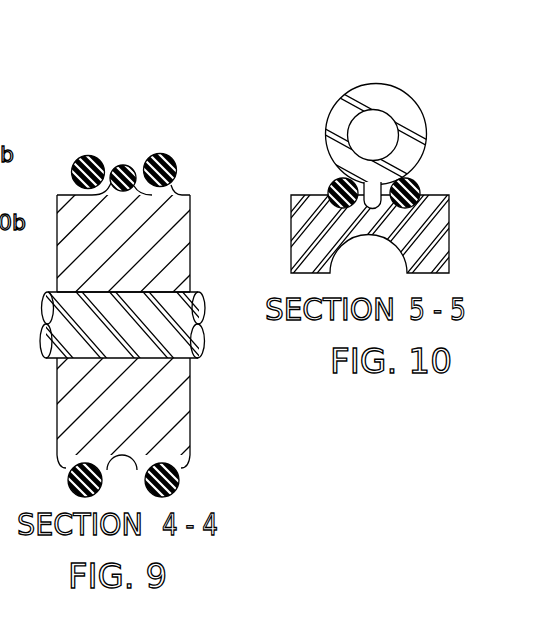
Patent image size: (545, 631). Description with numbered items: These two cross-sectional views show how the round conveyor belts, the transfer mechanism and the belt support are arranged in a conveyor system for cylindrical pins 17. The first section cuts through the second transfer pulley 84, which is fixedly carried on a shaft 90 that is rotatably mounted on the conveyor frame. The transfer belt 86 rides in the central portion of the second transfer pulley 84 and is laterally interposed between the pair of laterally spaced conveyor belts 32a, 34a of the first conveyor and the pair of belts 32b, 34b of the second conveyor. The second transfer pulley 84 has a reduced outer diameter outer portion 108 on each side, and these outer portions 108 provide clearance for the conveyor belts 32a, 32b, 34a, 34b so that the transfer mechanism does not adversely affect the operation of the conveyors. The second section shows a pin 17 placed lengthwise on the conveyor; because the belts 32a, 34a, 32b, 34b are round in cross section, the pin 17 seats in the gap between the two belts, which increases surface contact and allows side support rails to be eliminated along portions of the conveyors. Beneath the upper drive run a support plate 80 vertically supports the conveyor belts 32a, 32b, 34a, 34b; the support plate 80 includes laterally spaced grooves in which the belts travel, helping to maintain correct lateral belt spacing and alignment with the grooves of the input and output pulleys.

In FIG. 10, the cylindrical pin 17 is at (410, 96).
In FIG. 9, the belt 32a is at (152, 120).
In FIG. 10, the belt 32a is at (298, 189).
In FIG. 9, the belt 32b is at (88, 155).
In FIG. 10, the belt 32b is at (332, 183).
In FIG. 9, the belt 34a is at (203, 154).
In FIG. 10, the belt 34a is at (456, 189).
In FIG. 9, the belt 34b is at (163, 154).
In FIG. 10, the belt 34b is at (416, 182).
In FIG. 10, the support plate 80 is at (446, 250).
In FIG. 9, the second transfer pulley 84 is at (184, 262).
In FIG. 9, the transfer belt 86 is at (117, 166).
In FIG. 9, the shaft 90 is at (200, 342).
In FIG. 9, the reduced outer diameter outer portion 108 is at (62, 462).